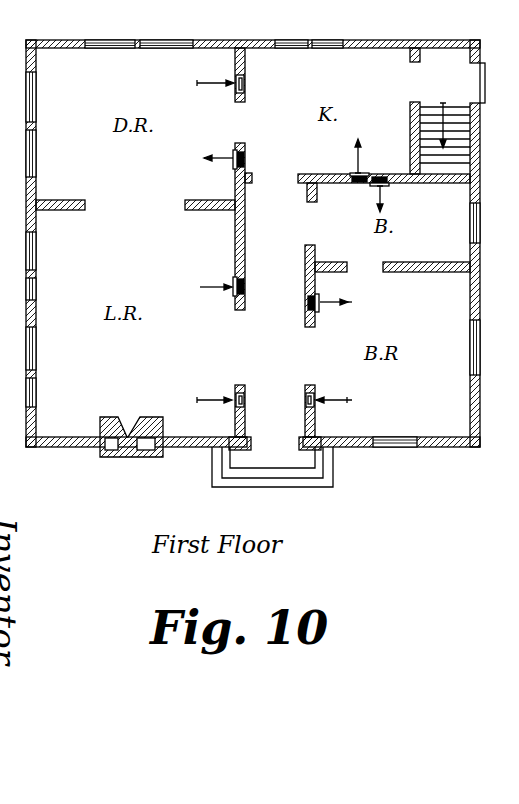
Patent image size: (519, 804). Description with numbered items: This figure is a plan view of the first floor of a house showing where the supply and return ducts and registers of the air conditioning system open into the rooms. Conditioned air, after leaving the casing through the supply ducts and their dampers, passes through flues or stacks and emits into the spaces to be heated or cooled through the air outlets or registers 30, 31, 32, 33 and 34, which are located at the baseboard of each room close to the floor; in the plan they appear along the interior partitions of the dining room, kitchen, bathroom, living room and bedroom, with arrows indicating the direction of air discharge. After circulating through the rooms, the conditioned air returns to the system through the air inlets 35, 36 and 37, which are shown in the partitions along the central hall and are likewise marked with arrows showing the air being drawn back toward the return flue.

The air outlet or register 30 is at (232, 282).
The air outlet or register 31 is at (240, 167).
The air outlet or register 32 is at (352, 175).
The air outlet or register 33 is at (320, 298).
The air outlet or register 34 is at (389, 185).
The air inlet 35 is at (236, 394).
The air inlet 36 is at (238, 80).
The air inlet 37 is at (316, 404).